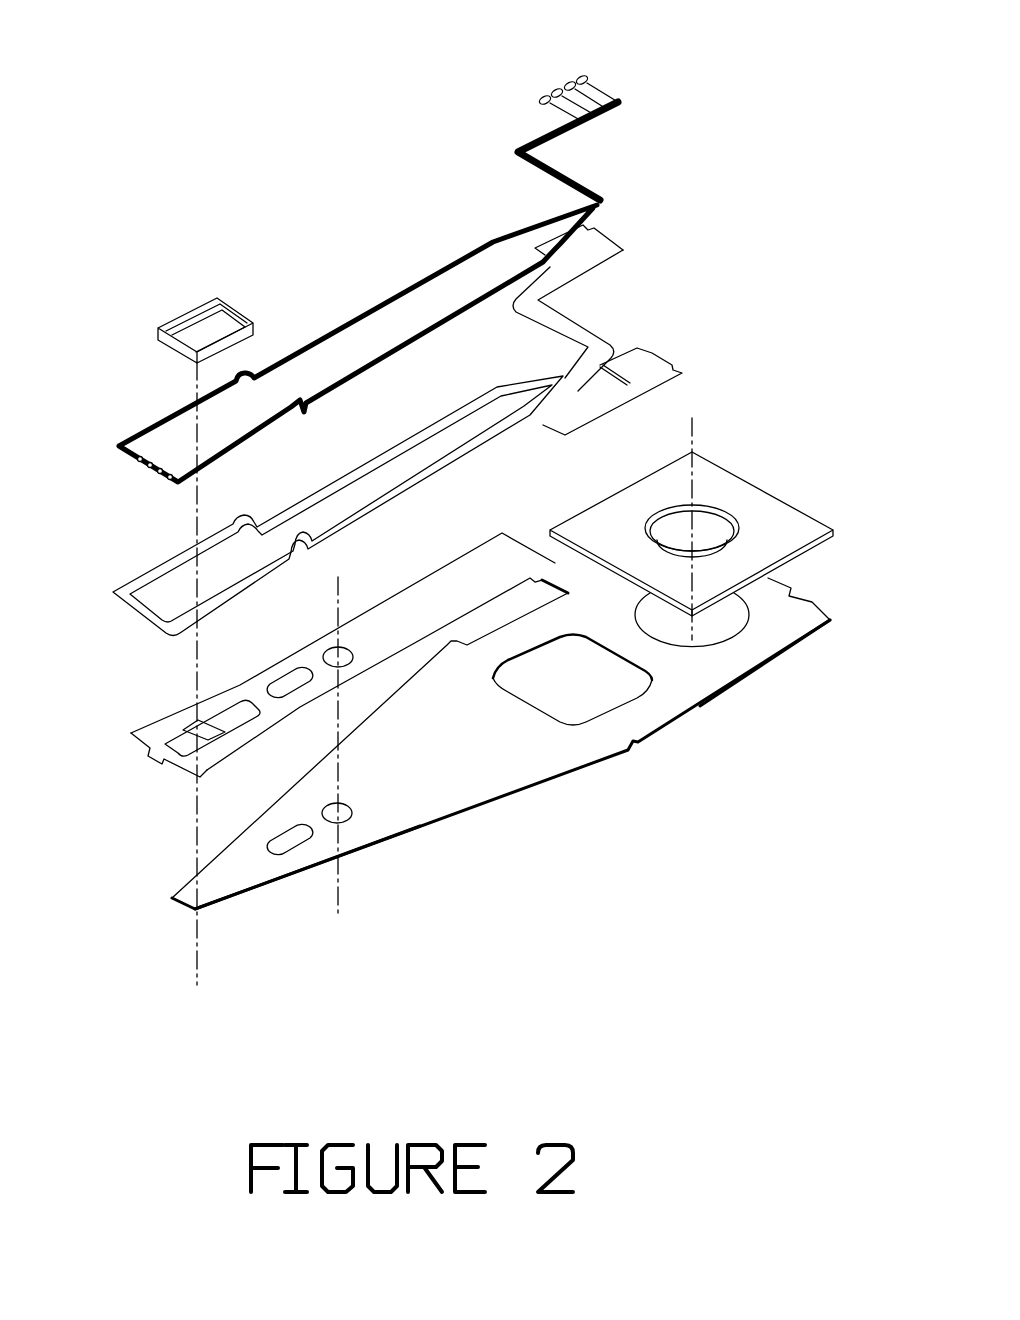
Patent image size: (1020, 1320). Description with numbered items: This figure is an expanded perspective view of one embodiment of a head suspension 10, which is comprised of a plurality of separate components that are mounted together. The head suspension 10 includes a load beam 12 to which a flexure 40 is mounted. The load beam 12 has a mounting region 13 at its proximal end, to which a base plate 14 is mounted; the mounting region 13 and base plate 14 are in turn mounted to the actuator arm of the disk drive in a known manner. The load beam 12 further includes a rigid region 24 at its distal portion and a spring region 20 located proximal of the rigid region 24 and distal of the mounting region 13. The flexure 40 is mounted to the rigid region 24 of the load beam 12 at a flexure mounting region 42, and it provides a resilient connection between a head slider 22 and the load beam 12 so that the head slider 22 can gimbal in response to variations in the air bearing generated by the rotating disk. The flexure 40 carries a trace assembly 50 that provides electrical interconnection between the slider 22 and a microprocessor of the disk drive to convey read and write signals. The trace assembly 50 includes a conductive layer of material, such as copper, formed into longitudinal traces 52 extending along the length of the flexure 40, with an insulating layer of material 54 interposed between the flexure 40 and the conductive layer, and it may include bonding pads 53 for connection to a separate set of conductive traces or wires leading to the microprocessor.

The head suspension 10 is at (748, 377).
The load beam 12 is at (490, 785).
The mounting region 13 is at (786, 621).
The base plate 14 is at (765, 517).
The spring region 20 is at (657, 708).
The head slider 22 is at (192, 310).
The rigid region 24 is at (362, 833).
The flexure 40 is at (105, 422).
The flexure mounting region 42 is at (443, 577).
The trace assembly 50 is at (653, 185).
The longitudinal traces 52 is at (333, 327).
The bonding pads 53 is at (585, 80).
The insulating layer of material 54 is at (560, 322).